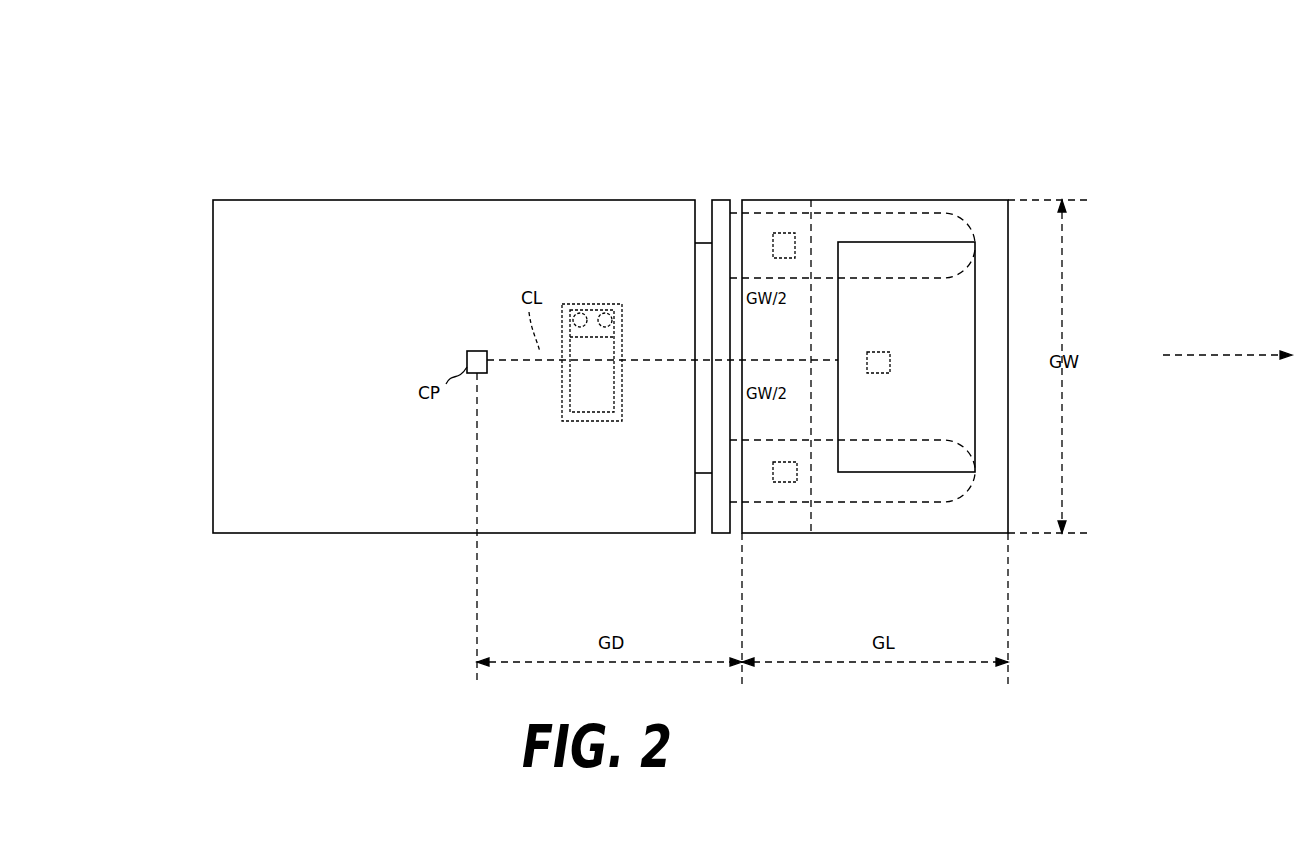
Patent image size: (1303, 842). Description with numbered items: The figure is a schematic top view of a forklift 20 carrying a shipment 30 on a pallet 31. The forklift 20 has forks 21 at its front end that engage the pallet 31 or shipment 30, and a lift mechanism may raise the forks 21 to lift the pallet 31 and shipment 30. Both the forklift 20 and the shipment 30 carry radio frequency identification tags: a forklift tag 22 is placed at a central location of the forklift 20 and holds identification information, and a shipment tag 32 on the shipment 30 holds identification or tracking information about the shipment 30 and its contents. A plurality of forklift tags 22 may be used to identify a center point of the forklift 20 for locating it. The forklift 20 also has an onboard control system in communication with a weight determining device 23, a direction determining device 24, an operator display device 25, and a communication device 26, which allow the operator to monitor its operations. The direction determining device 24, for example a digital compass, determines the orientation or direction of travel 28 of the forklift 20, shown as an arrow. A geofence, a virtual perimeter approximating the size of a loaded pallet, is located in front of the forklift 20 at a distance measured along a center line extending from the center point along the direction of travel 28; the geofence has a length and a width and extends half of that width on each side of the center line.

The forklift 20 is at (674, 78).
The forks 21 is at (903, 213).
The forklift tag 22 is at (479, 350).
The weight determining device 23 is at (786, 233).
The direction determining device 24 is at (578, 306).
The operator display device 25 is at (598, 422).
The communication device 26 is at (604, 306).
The direction of travel 28 is at (1227, 360).
The shipment 30 is at (975, 291).
The pallet 31 is at (838, 200).
The shipment tag 32 is at (890, 362).